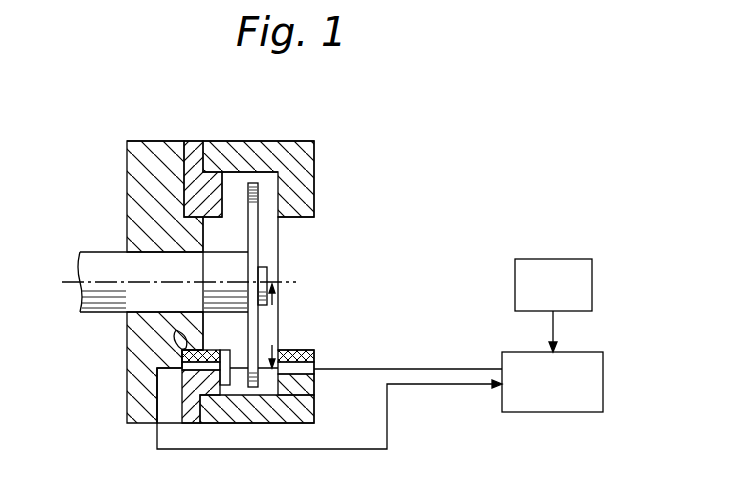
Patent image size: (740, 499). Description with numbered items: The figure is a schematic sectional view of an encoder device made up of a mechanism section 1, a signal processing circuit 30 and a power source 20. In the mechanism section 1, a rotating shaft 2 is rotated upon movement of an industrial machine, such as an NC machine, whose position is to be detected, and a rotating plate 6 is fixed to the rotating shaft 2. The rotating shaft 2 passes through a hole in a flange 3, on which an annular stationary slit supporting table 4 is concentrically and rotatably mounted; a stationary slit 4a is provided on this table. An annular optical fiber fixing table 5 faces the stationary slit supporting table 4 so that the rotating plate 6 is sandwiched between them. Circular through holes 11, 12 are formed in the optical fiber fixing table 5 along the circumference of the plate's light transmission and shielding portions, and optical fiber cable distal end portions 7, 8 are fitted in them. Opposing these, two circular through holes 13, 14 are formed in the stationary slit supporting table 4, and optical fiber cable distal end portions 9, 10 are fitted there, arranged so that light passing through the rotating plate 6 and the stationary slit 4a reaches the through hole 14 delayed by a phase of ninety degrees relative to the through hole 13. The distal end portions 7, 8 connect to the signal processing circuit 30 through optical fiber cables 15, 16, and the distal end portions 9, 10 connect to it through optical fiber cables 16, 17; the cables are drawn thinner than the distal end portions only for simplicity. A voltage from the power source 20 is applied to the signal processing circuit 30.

The mechanism section 1 is at (268, 130).
The rotating shaft 2 is at (107, 264).
The flange 3 is at (146, 140).
The stationary slit supporting table 4 is at (193, 140).
The stationary slit 4a is at (225, 350).
The optical fiber fixing table 5 is at (314, 160).
The rotating plate 6 is at (258, 237).
The optical fiber cable distal end portion 7 is at (317, 358).
The optical fiber cable distal end portion 8 is at (302, 351).
The optical fiber cable distal end portion 9 is at (137, 386).
The optical fiber cable distal end portion 10 is at (182, 362).
The circular through hole 11 is at (289, 398).
The circular through hole 12 is at (292, 374).
The circular through hole 13 is at (118, 334).
The circular through hole 14 is at (180, 346).
The optical fiber cable 15 is at (410, 368).
The optical fiber cable 16 is at (329, 387).
The optical fiber cable 17 is at (410, 388).
The power source 20 is at (592, 283).
The signal processing circuit 30 is at (603, 377).